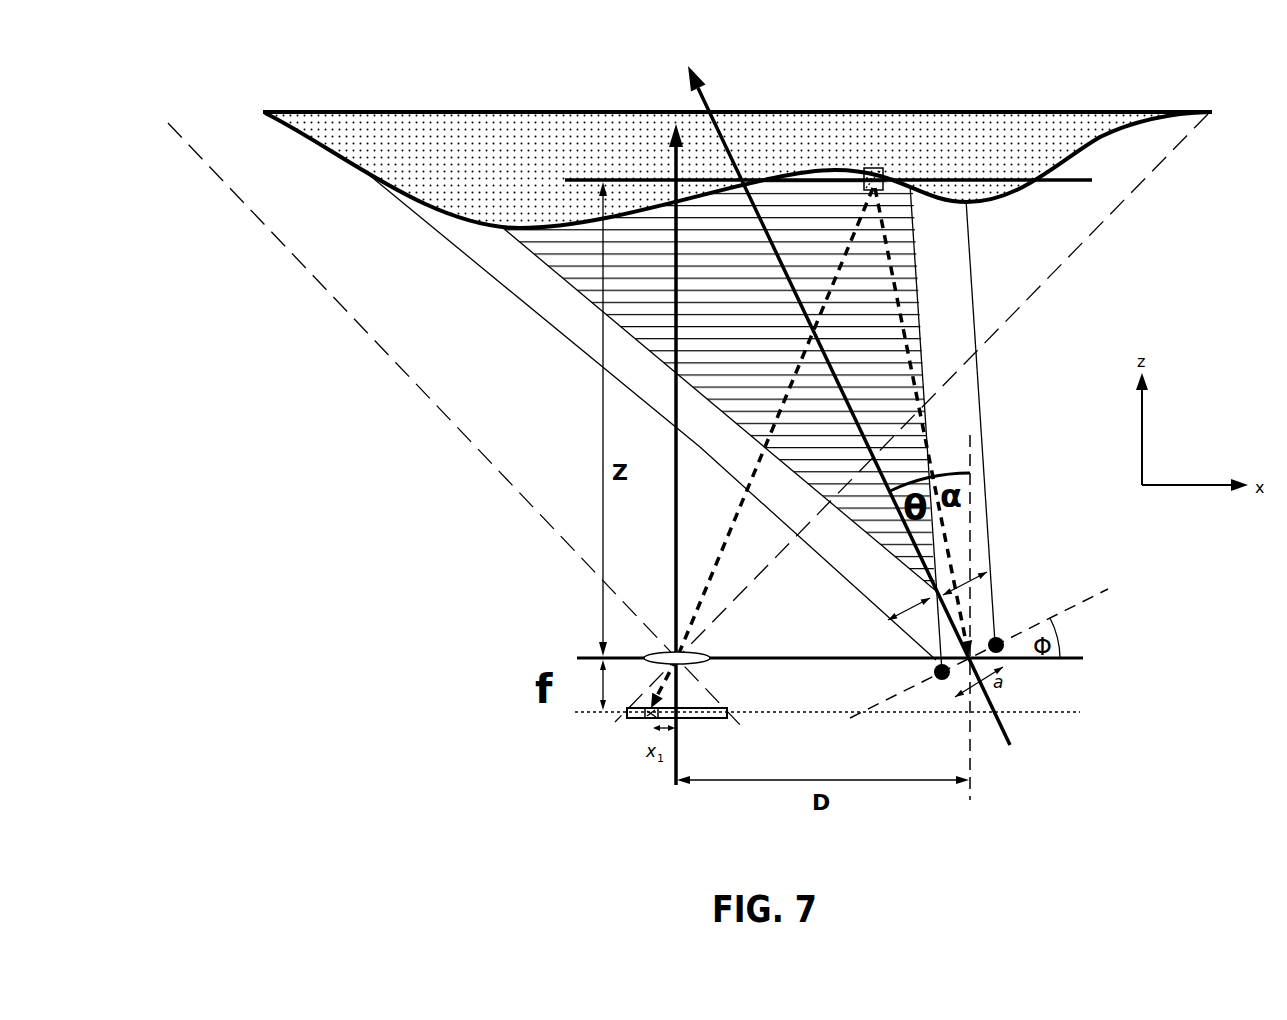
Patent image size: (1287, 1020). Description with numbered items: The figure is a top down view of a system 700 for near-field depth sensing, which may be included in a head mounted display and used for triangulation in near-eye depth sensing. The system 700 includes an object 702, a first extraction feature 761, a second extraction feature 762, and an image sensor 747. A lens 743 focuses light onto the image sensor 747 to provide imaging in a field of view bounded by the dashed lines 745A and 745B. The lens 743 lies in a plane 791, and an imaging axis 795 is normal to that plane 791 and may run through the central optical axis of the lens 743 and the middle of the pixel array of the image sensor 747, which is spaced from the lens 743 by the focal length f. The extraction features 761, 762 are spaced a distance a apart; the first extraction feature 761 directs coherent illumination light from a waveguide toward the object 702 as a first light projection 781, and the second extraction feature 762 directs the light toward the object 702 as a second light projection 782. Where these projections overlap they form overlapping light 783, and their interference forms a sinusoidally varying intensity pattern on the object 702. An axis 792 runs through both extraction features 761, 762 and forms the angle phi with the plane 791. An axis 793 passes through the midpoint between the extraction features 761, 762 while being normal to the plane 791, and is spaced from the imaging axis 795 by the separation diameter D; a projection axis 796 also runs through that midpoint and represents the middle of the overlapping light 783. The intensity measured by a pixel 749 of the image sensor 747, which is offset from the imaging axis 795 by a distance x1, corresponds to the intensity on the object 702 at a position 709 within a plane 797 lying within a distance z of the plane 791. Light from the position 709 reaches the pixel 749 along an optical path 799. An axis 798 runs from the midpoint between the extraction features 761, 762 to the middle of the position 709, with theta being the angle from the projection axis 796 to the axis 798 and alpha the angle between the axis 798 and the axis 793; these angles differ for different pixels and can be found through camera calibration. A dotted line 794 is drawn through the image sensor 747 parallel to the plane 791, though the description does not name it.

The system 700 is at (1272, 24).
The object 702 is at (490, 168).
The position 709 is at (884, 168).
The lens 743 is at (700, 656).
The dashed line 745A is at (398, 368).
The dashed line 745B is at (1062, 275).
The image sensor 747 is at (722, 719).
The pixel 749 is at (651, 722).
The first extraction feature 761 is at (941, 683).
The second extraction feature 762 is at (997, 637).
The first light projection 781 is at (908, 601).
The second light projection 782 is at (966, 577).
The overlapping light 783 is at (775, 423).
The plane 791 is at (1085, 657).
The axis 792 is at (1109, 590).
The axis 793 is at (972, 792).
The sensor plane line 794 is at (1080, 712).
The imaging axis 795 is at (676, 532).
The projection axis 796 is at (722, 80).
The plane 797 is at (1085, 178).
The axis 798 is at (897, 283).
The optical path 799 is at (729, 522).